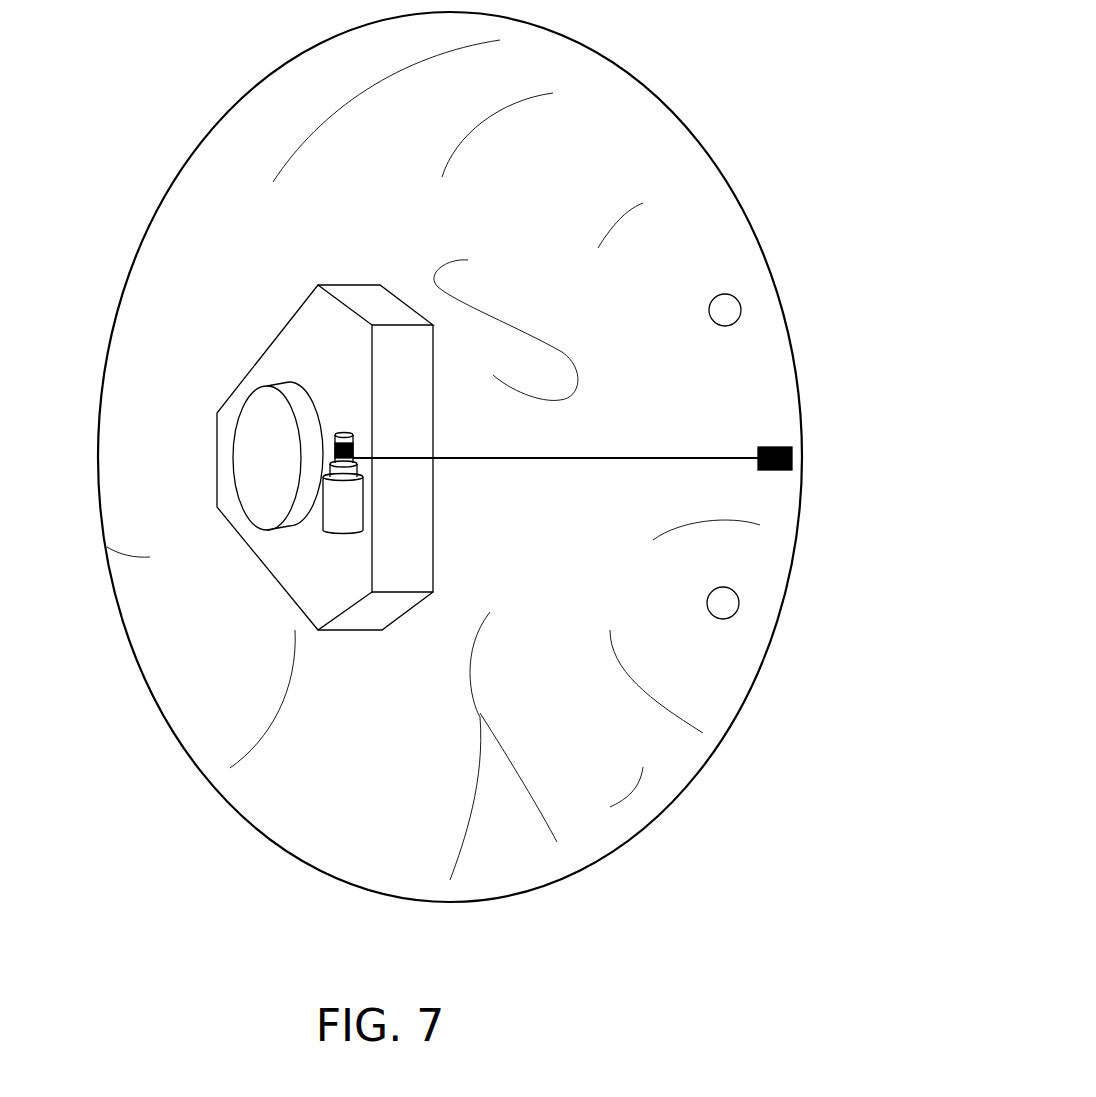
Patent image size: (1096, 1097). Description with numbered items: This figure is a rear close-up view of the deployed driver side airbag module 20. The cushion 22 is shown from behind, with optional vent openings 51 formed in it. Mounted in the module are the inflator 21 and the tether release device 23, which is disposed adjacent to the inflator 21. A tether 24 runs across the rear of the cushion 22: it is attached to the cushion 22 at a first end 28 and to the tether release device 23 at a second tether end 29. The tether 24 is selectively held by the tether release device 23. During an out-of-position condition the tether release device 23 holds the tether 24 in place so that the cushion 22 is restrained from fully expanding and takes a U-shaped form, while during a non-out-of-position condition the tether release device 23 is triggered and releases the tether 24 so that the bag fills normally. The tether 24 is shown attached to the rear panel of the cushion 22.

The driver side airbag module 20 is at (292, 300).
The inflator 21 is at (237, 427).
The cushion 22 is at (622, 132).
The tether release device 23 is at (323, 528).
The tether 24 is at (707, 460).
The first end 28 is at (765, 445).
The second tether end 29 is at (332, 443).
The vent openings 51 is at (743, 309).